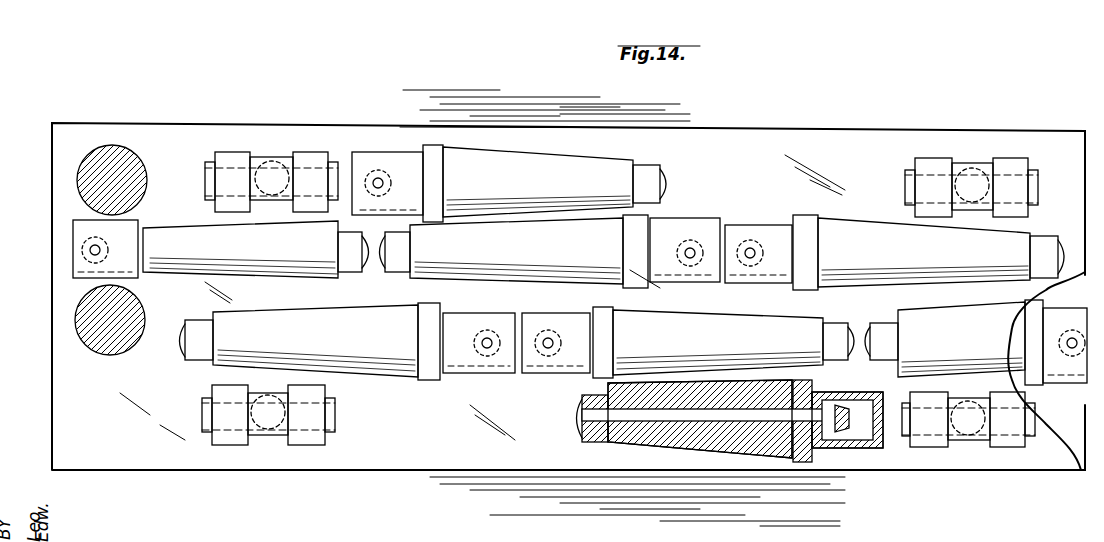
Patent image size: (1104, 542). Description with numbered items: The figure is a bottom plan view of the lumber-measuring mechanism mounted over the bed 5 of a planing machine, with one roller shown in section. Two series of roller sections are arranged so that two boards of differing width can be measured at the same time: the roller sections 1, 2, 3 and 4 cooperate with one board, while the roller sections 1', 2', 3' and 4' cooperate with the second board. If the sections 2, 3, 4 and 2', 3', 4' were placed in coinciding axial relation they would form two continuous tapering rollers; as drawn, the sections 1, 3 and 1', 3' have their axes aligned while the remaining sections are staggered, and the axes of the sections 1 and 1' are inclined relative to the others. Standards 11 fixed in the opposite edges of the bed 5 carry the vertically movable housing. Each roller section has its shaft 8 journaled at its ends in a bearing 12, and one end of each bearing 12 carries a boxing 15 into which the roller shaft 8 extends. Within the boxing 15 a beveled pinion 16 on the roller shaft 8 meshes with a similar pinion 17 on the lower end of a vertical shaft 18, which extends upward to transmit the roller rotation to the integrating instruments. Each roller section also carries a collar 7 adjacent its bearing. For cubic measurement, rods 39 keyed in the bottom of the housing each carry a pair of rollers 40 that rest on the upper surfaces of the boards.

The roller section 1 is at (240, 241).
The roller section 1' is at (961, 332).
The roller section 2 is at (315, 355).
The roller section 2' is at (924, 263).
The roller section 3 is at (516, 262).
The roller section 3' is at (718, 331).
The roller section 4 is at (709, 425).
The roller section 4' is at (538, 175).
The bed 5 is at (60, 405).
The collar 7 is at (432, 155).
The roller shaft 8 is at (668, 185).
The standard 11 is at (135, 325).
The bearing 12 is at (135, 253).
The boxing 15 is at (80, 250).
The beveled pinion 16 is at (840, 428).
The pinion 17 is at (70, 272).
The vertical shaft 18 is at (880, 448).
The rod 39 is at (273, 166).
The roller 40 is at (228, 162).